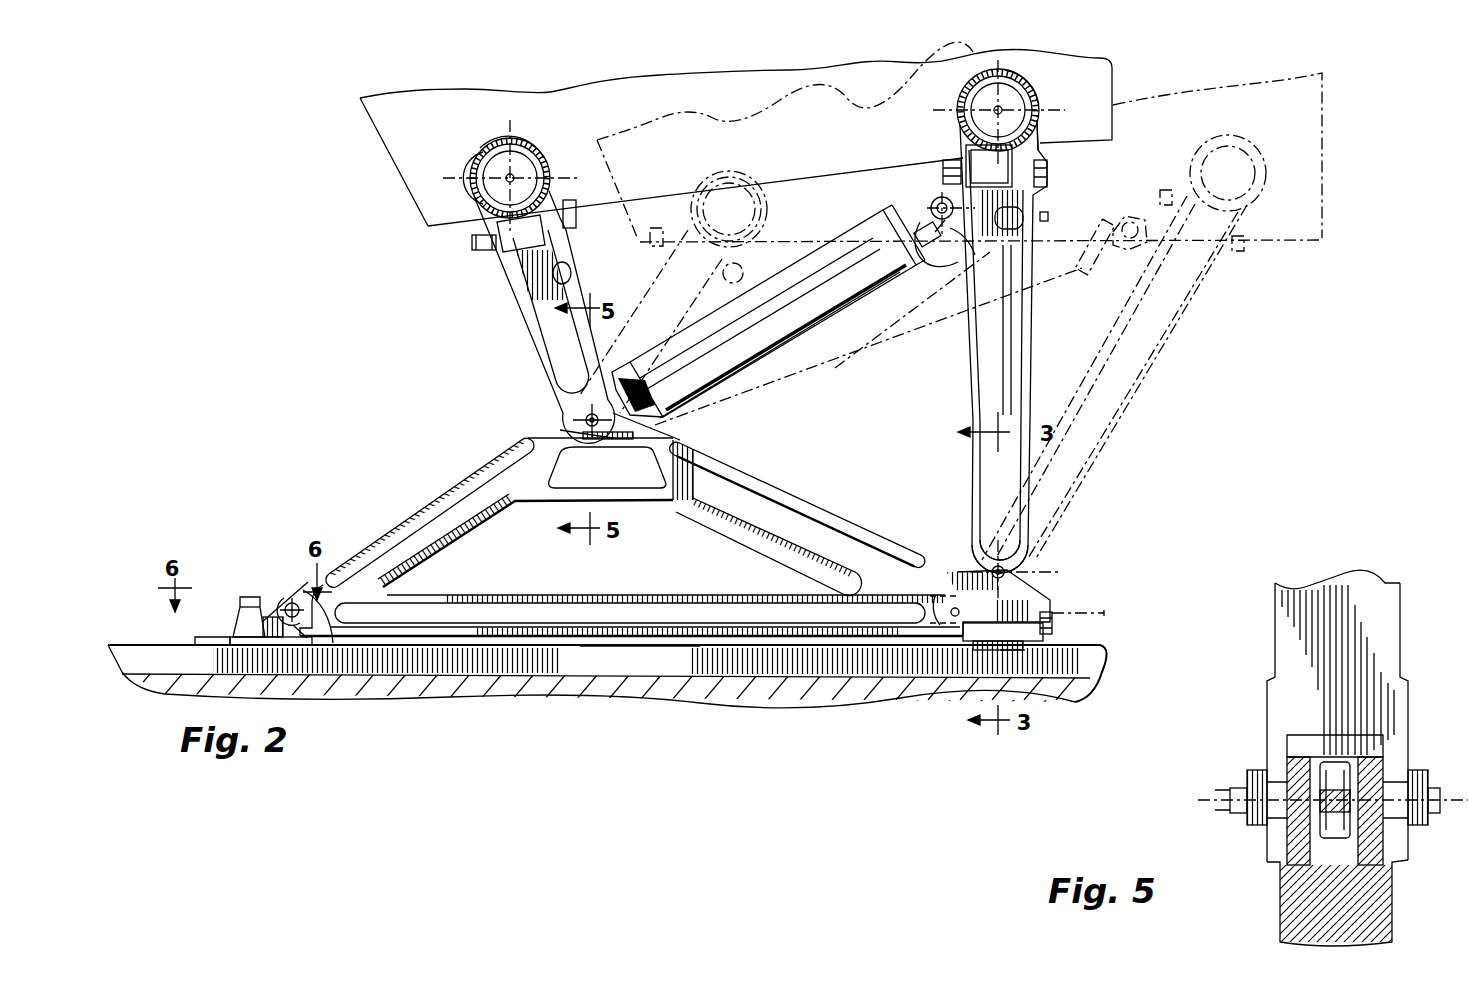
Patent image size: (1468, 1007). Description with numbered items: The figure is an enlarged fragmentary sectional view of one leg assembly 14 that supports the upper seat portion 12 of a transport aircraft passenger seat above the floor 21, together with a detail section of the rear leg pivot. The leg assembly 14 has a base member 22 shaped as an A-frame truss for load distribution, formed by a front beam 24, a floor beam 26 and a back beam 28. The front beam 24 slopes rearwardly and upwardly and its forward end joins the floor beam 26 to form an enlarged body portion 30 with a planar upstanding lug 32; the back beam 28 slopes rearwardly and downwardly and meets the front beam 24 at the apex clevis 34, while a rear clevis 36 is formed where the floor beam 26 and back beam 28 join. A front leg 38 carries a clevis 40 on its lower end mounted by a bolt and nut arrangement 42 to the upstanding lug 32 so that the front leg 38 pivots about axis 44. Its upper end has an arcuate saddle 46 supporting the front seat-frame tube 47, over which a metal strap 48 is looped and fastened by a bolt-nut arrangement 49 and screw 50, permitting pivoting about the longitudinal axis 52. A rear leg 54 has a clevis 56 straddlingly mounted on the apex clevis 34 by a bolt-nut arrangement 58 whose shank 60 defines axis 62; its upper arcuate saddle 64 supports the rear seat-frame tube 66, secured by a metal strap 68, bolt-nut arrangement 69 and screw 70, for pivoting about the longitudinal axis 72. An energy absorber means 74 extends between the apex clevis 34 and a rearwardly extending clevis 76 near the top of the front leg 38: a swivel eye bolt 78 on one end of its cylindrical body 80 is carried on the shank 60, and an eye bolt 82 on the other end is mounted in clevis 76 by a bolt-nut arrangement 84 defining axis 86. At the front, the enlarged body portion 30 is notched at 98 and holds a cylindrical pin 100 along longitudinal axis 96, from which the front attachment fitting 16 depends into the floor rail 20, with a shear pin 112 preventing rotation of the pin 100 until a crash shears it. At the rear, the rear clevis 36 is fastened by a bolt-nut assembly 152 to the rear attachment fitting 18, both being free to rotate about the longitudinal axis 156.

In FIG. 2, the upper seat portion 12 is at (688, 106).
In FIG. 2, the leg assembly 14 is at (529, 279).
In FIG. 2, the front attachment fitting 16 is at (1010, 657).
In FIG. 2, the rear attachment fitting 18 is at (243, 612).
In FIG. 2, the floor rail 20 is at (733, 686).
In FIG. 2, the floor 21 is at (648, 694).
In FIG. 2, the base member 22 is at (667, 554).
In FIG. 2, the front beam 24 is at (814, 521).
In FIG. 2, the floor beam 26 is at (538, 606).
In FIG. 2, the back beam 28 is at (430, 513).
In FIG. 2, the enlarged body portion 30 is at (1052, 606).
In FIG. 2, the upstanding lug 32 is at (1042, 590).
In FIG. 2, the apex clevis 34 is at (540, 438).
In FIG. 5, the apex clevis 34 is at (1280, 862).
In FIG. 2, the rear clevis 36 is at (293, 600).
In FIG. 2, the front leg 38 is at (1002, 316).
In FIG. 2, the clevis 40 is at (976, 546).
In FIG. 2, the bolt and nut arrangement 42 is at (1010, 568).
In FIG. 2, the axis 44 is at (985, 568).
In FIG. 2, the arcuate saddle 46 is at (962, 156).
In FIG. 2, the front seat-frame tube 47 is at (1034, 104).
In FIG. 2, the metal strap 48 is at (1042, 121).
In FIG. 2, the bolt-nut arrangement 49 is at (1050, 176).
In FIG. 2, the screw 50 is at (1035, 216).
In FIG. 2, the longitudinal axis 52 is at (990, 108).
In FIG. 2, the rear leg 54 is at (548, 318).
In FIG. 5, the rear leg 54 is at (1390, 641).
In FIG. 2, the clevis 56 is at (565, 390).
In FIG. 5, the clevis 56 is at (1395, 758).
In FIG. 2, the bolt-nut arrangement 58 is at (598, 434).
In FIG. 5, the bolt-nut arrangement 58 is at (1422, 772).
In FIG. 5, the shank 60 is at (1248, 782).
In FIG. 2, the axis 62 is at (585, 422).
In FIG. 5, the axis 62 is at (1442, 806).
In FIG. 2, the arcuate saddle 64 is at (528, 255).
In FIG. 2, the rear seat-frame tube 66 is at (536, 152).
In FIG. 2, the metal strap 68 is at (482, 166).
In FIG. 2, the bolt-nut arrangement 69 is at (472, 242).
In FIG. 2, the screw 70 is at (577, 222).
In FIG. 2, the longitudinal axis 72 is at (503, 172).
In FIG. 2, the energy absorber means 74 is at (828, 308).
In FIG. 2, the clevis 76 is at (935, 262).
In FIG. 5, the eye bolt 78 is at (1333, 765).
In FIG. 2, the cylindrical body 80 is at (741, 393).
In FIG. 2, the eye bolt 82 is at (928, 268).
In FIG. 2, the bolt-nut arrangement 84 is at (930, 209).
In FIG. 2, the axis 86 is at (946, 188).
In FIG. 2, the longitudinal axis 96 is at (1102, 614).
In FIG. 2, the notch 98 is at (1052, 626).
In FIG. 2, the cylindrical pin 100 is at (970, 645).
In FIG. 2, the shear pin 112 is at (935, 606).
In FIG. 2, the bolt-nut assembly 152 is at (288, 604).
In FIG. 2, the longitudinal axis 156 is at (326, 632).